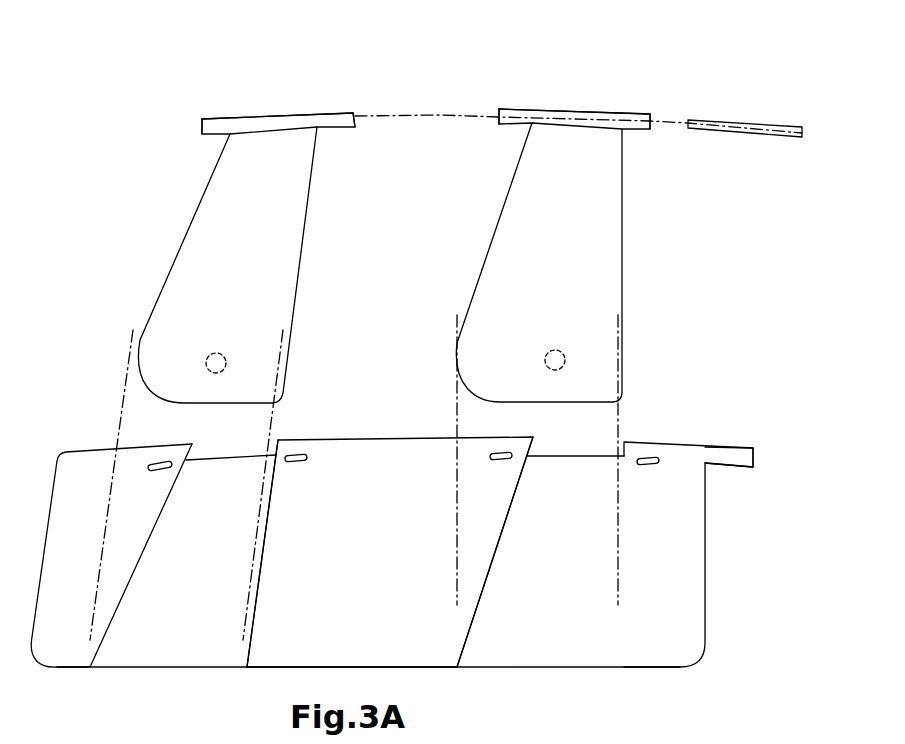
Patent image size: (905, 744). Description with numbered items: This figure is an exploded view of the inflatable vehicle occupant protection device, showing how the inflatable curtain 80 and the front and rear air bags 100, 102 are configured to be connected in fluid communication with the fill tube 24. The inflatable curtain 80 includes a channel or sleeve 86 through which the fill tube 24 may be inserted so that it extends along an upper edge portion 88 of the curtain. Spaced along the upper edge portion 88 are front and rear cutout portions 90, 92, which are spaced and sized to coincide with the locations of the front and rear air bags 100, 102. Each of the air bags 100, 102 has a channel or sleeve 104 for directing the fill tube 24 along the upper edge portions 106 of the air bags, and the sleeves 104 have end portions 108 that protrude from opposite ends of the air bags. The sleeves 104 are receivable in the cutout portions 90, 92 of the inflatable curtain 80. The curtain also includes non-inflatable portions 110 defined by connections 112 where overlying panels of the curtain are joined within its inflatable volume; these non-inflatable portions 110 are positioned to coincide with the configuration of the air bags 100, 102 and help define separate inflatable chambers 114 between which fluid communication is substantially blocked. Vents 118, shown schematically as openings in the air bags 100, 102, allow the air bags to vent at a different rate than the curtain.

The fill tube 24 is at (733, 122).
The inflatable curtain 80 is at (347, 465).
The sleeve 86 is at (732, 453).
The upper edge portion 88 is at (402, 442).
The front cutout portion 90 is at (202, 450).
The rear cutout portion 92 is at (538, 452).
The front air bag 100 is at (278, 255).
The rear air bag 102 is at (580, 248).
The sleeve 104 is at (330, 117).
The upper edge portion 106 is at (268, 137).
The end portion 108 is at (207, 117).
The non-inflatable portion 110 is at (178, 635).
The connection 112 is at (137, 567).
The inflatable chamber 114 is at (67, 550).
The vent 118 is at (222, 355).